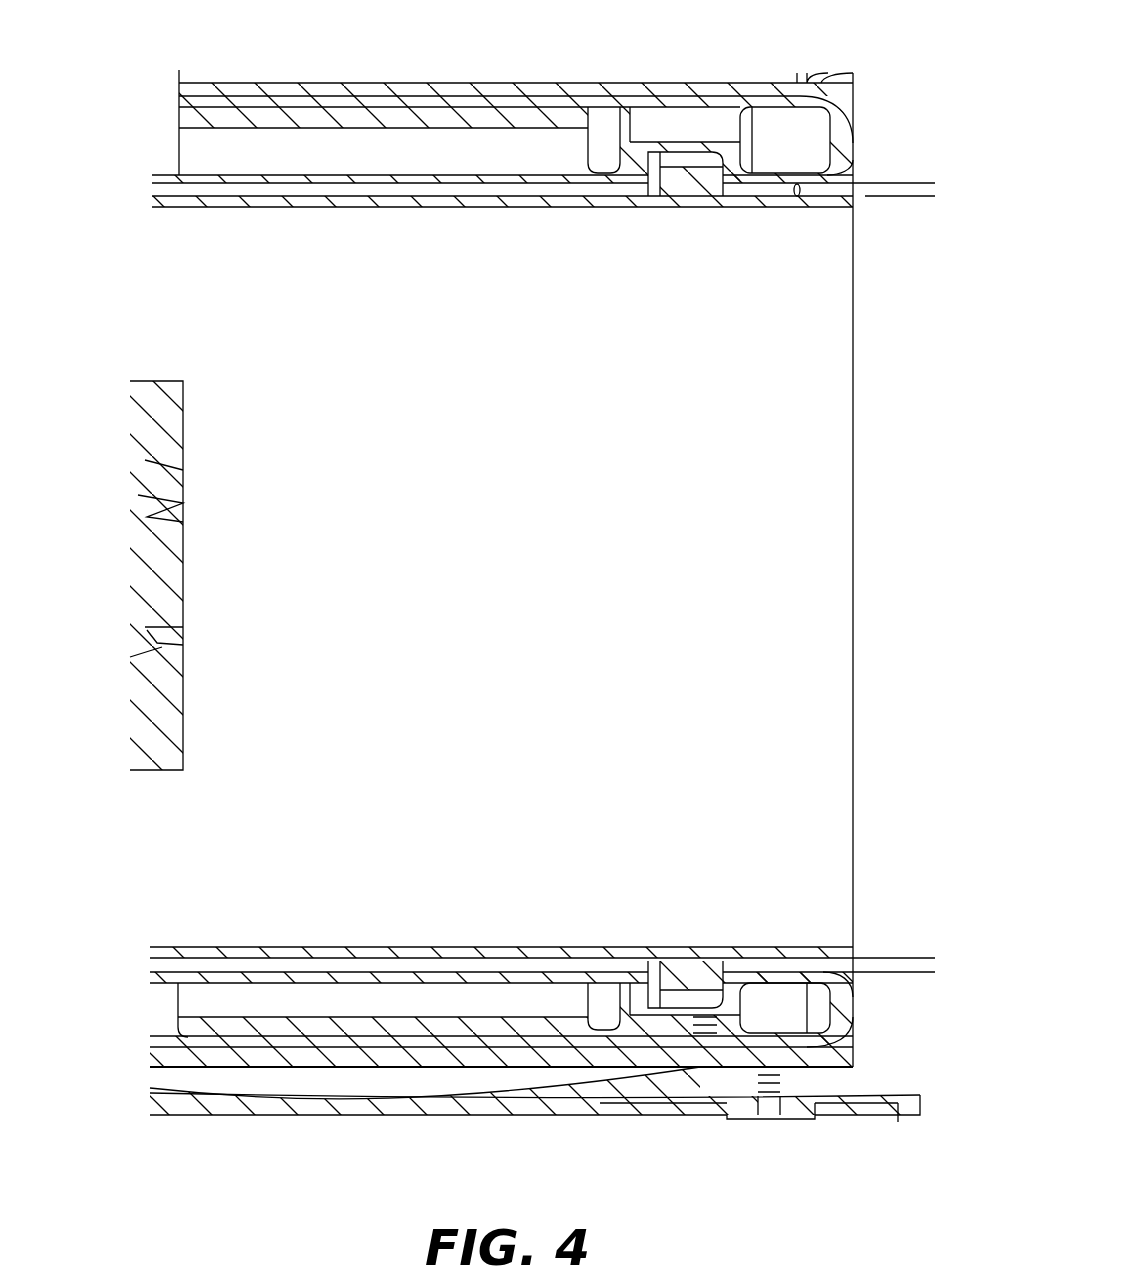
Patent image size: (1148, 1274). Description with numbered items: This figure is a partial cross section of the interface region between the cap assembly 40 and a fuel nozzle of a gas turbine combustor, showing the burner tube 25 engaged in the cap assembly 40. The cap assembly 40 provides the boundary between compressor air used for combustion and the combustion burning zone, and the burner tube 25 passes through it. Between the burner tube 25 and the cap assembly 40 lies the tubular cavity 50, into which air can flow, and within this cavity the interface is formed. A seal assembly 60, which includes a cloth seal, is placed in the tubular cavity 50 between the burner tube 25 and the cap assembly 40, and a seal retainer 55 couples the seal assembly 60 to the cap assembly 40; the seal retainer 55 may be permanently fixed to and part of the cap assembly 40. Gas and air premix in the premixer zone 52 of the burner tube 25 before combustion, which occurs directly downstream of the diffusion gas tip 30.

The burner tube 25 is at (230, 207).
The diffusion gas tip 30 is at (183, 627).
The cap assembly 40 is at (698, 83).
The tubular cavity 50 is at (372, 188).
The premixer zone 52 is at (155, 337).
The seal retainer 55 is at (690, 152).
The seal assembly 60 is at (693, 173).